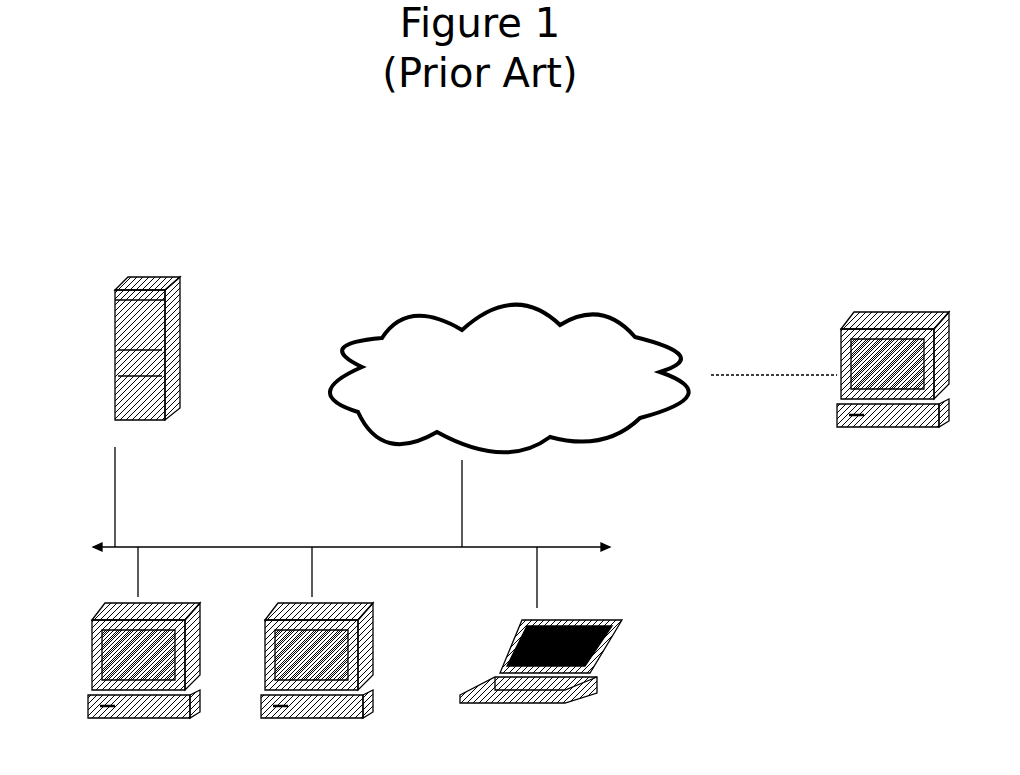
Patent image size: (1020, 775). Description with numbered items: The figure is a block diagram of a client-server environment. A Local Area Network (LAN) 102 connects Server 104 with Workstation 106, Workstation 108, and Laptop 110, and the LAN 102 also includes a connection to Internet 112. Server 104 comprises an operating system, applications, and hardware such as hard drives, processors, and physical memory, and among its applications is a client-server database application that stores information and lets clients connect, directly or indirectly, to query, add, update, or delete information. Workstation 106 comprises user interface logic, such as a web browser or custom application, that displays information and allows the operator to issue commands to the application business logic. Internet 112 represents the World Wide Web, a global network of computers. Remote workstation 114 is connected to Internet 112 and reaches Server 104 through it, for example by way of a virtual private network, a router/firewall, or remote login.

The Local Area Network (LAN) 102 is at (262, 547).
The server 104 is at (179, 276).
The workstation 106 is at (195, 602).
The workstation 108 is at (368, 602).
The laptop 110 is at (622, 620).
The Internet 112 is at (532, 295).
The remote workstation 114 is at (886, 310).